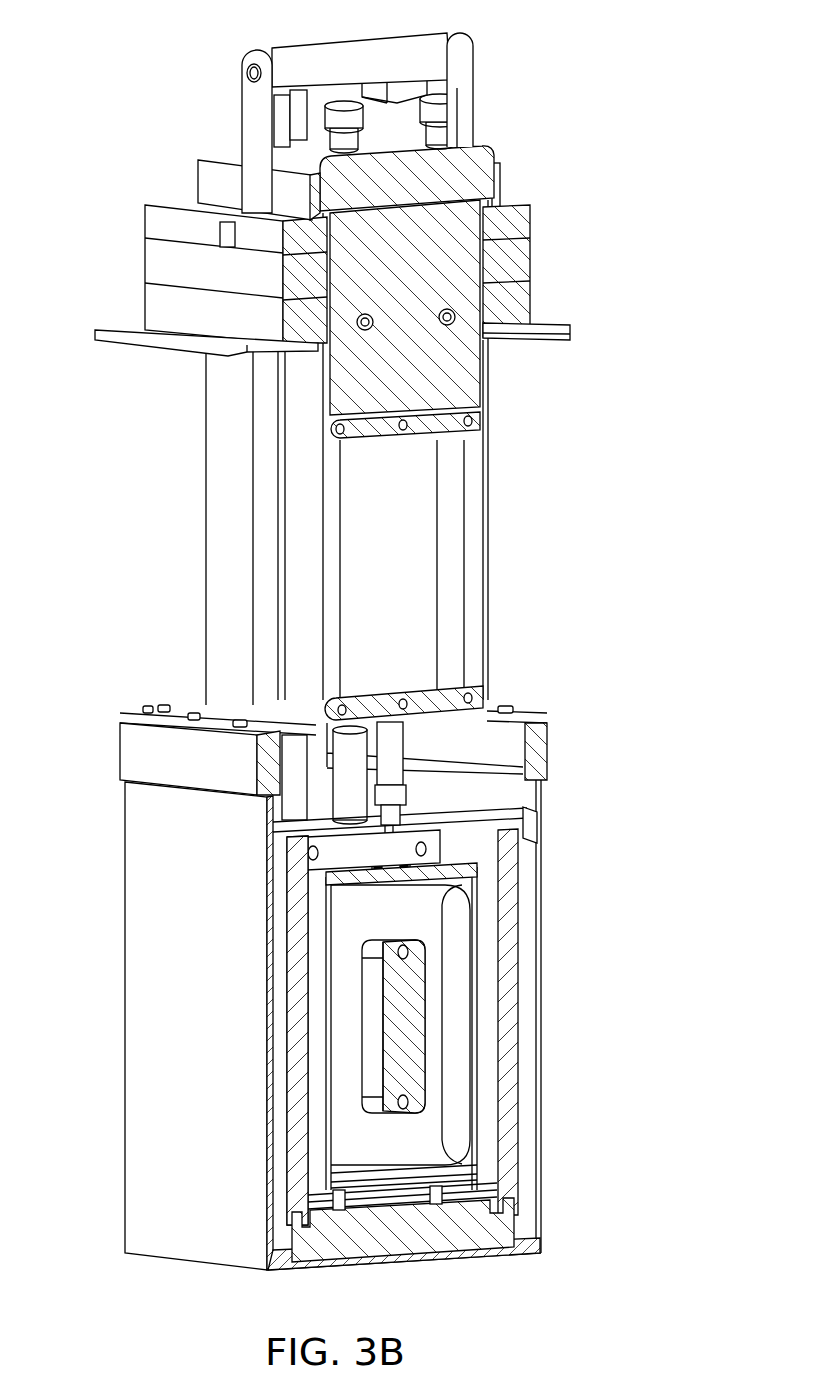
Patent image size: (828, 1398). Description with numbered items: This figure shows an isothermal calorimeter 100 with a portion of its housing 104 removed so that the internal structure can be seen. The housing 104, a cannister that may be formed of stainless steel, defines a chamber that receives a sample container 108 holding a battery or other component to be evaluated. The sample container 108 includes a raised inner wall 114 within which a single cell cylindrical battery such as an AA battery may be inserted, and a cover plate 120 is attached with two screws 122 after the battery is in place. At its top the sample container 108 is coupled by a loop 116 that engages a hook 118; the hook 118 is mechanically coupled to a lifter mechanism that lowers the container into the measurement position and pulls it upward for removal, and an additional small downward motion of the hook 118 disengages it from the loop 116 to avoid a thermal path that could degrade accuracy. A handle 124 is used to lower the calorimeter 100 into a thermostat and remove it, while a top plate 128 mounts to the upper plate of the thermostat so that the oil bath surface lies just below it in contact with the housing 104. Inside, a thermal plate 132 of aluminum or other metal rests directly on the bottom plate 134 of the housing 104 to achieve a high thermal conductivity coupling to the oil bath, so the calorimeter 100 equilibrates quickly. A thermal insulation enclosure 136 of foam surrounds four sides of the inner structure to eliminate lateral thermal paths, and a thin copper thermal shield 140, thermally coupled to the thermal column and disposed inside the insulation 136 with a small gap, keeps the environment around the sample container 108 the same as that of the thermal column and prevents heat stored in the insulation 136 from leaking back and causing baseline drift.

The isothermal calorimeter 100 is at (630, 438).
The housing 104 is at (545, 1150).
The sample container 108 is at (306, 1002).
The raised inner wall 114 is at (373, 1053).
The loop 116 is at (372, 866).
The hook 118 is at (372, 850).
The cover plate 120 is at (420, 1022).
The screws 122 is at (403, 946).
The handle 124 is at (358, 42).
The top plate 128 is at (118, 330).
The thermal plate 132 is at (470, 1238).
The bottom plate 134 is at (300, 1262).
The thermal insulation enclosure 136 is at (294, 950).
The thermal shield 140 is at (487, 1004).